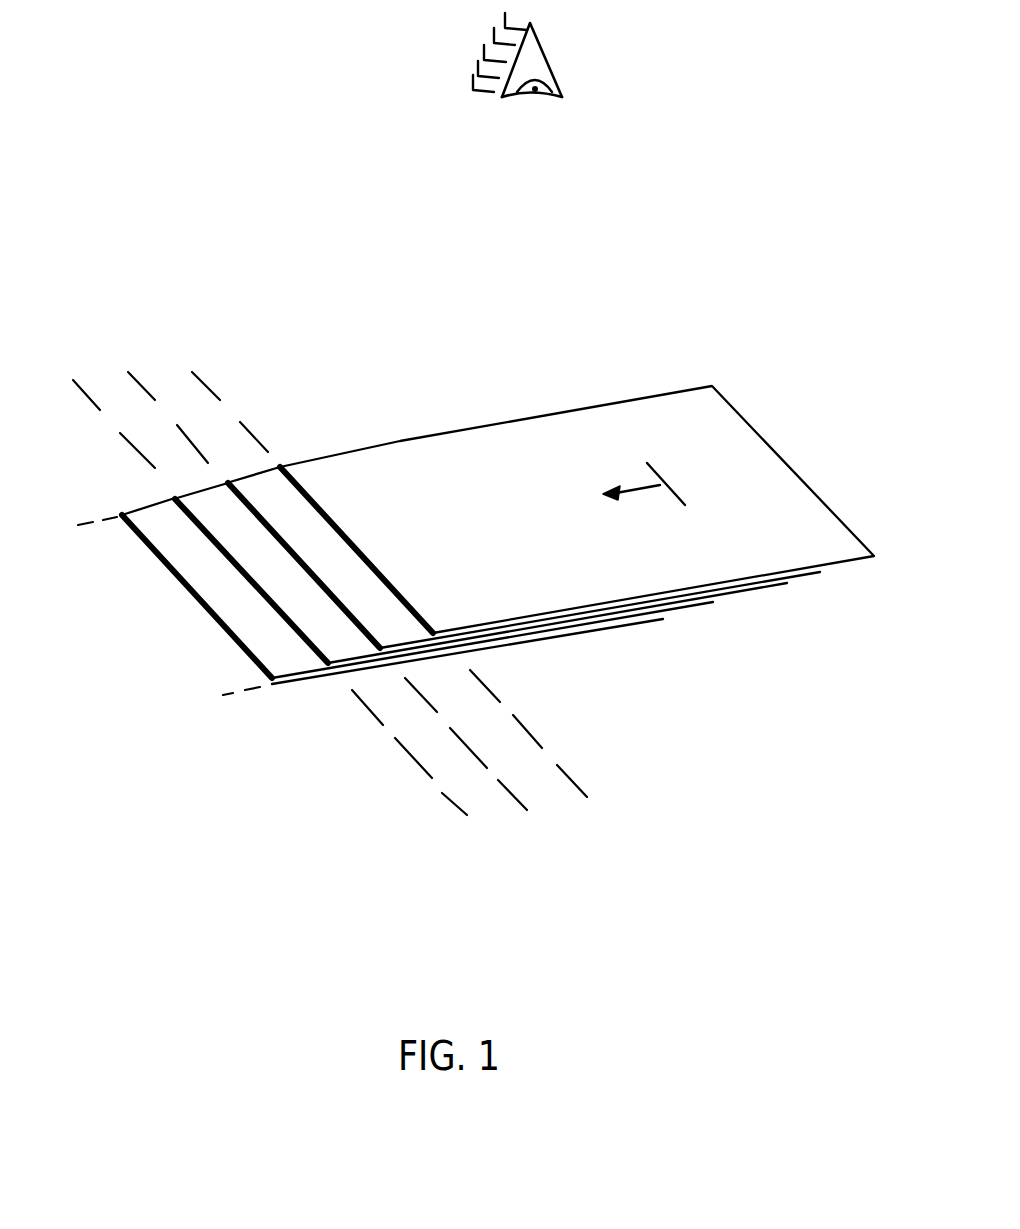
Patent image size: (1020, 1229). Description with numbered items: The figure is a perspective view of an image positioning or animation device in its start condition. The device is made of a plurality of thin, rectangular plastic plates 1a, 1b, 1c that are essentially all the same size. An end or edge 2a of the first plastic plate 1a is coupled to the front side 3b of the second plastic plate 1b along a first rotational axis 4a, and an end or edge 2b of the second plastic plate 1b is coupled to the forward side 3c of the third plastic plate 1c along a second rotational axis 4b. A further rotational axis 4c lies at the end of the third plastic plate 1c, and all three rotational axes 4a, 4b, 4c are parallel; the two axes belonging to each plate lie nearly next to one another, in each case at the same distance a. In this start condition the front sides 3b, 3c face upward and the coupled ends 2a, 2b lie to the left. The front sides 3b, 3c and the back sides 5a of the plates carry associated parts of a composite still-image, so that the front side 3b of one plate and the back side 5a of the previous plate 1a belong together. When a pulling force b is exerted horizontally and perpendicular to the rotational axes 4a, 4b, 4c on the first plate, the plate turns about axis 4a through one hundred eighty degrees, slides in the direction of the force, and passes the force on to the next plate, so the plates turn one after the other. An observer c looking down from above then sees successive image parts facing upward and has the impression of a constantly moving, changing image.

The first plastic plate 1a is at (783, 463).
The second plastic plate 1b is at (787, 577).
The third plastic plate 1c is at (733, 590).
The end or edge of the first plastic plate 2a is at (302, 516).
The end or edge of the second plastic plate 2b is at (258, 500).
The front side of the second plastic plate 3b is at (340, 566).
The front side of the third plastic plate 3c is at (268, 565).
The first rotational axis 4a is at (609, 828).
The second rotational axis 4b is at (549, 847).
The rotational axis at the end of the third plastic plate 4c is at (490, 858).
The back side of the first plastic plate 5a is at (845, 577).
The distance between rotational axes a is at (118, 364).
The pulling force b is at (626, 495).
The observer c is at (566, 62).